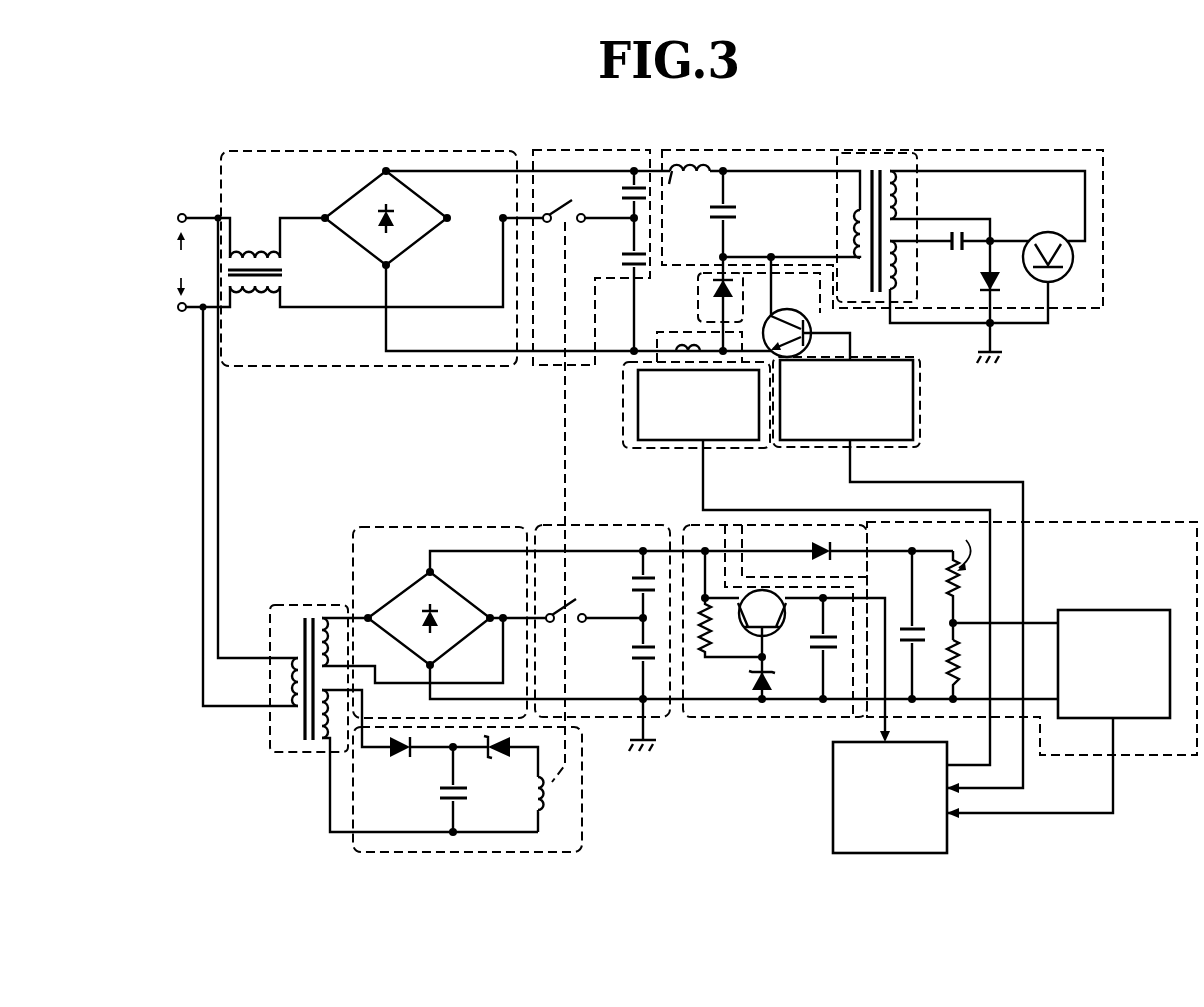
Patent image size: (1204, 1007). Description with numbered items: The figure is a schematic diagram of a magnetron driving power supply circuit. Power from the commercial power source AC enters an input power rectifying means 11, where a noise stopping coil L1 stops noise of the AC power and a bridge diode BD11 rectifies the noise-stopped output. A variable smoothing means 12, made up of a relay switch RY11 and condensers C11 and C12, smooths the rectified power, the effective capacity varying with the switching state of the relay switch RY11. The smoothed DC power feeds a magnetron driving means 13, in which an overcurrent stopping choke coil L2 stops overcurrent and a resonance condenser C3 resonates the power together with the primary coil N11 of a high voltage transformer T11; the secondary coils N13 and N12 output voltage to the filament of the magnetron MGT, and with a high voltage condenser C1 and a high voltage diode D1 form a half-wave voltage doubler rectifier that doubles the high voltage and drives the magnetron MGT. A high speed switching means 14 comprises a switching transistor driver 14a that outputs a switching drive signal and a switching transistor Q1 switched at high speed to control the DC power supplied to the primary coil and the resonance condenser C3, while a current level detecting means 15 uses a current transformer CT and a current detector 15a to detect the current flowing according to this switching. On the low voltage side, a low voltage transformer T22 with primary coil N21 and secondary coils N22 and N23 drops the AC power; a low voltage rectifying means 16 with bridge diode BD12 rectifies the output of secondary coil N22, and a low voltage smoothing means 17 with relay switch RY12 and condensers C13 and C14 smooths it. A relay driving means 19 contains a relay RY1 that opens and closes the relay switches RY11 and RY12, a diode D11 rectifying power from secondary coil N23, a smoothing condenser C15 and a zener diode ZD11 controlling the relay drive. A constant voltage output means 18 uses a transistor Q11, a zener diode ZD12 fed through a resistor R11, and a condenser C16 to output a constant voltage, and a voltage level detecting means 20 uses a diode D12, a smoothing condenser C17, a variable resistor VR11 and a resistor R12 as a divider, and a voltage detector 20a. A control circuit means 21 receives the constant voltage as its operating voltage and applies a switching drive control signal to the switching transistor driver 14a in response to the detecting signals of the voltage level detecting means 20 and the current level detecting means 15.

The input power rectifying means 11 is at (371, 151).
The variable smoothing means 12 is at (594, 150).
The magnetron driving means 13 is at (823, 150).
The high speed switching means 14 is at (893, 575).
The switching transistor driver 14a is at (796, 440).
The current level detecting means 15 is at (781, 563).
The current detector 15a is at (638, 392).
The low voltage rectifying means 16 is at (457, 527).
The low voltage smoothing means 17 is at (621, 525).
The constant voltage output means 18 is at (765, 717).
The relay driving means 19 is at (582, 814).
The voltage level detecting means 20 is at (1123, 522).
The voltage detector 20a is at (1115, 610).
The control circuit means 21 is at (833, 820).
The commercial power source AC is at (200, 262).
The noise stopping coil L1 is at (272, 254).
The bridge diode BD11 is at (360, 197).
The relay switch RY11 is at (560, 207).
The condenser C11 is at (626, 193).
The condenser C12 is at (624, 254).
The overcurrent stopping choke coil L2 is at (689, 185).
The resonance condenser C3 is at (739, 214).
The high voltage diode D1 is at (739, 291).
The switching transistor Q1 is at (806, 313).
The current transformer CT is at (699, 333).
The high voltage transformer T11 is at (875, 236).
The primary coil N11 is at (854, 237).
The secondary coil N12 is at (902, 189).
The secondary coil N13 is at (892, 292).
The high voltage condenser C1 is at (958, 251).
The magnetron MGT is at (1048, 244).
The low voltage transformer T22 is at (315, 663).
The primary coil N21 is at (286, 680).
The secondary coil N22 is at (335, 640).
The secondary coil N23 is at (334, 710).
The bridge diode BD12 is at (456, 576).
The relay switch RY12 is at (574, 619).
The condenser C13 is at (626, 582).
The condenser C14 is at (626, 658).
The diode D11 is at (402, 760).
The zener diode ZD11 is at (504, 760).
The condenser C15 is at (448, 795).
The relay RY1 is at (548, 792).
The resistor R11 is at (710, 622).
The transistor Q11 is at (783, 603).
The condenser C16 is at (811, 636).
The zener diode ZD12 is at (753, 673).
The diode D12 is at (839, 532).
The variable resistor VR11 is at (948, 584).
The resistor R12 is at (948, 654).
The condenser C17 is at (920, 635).